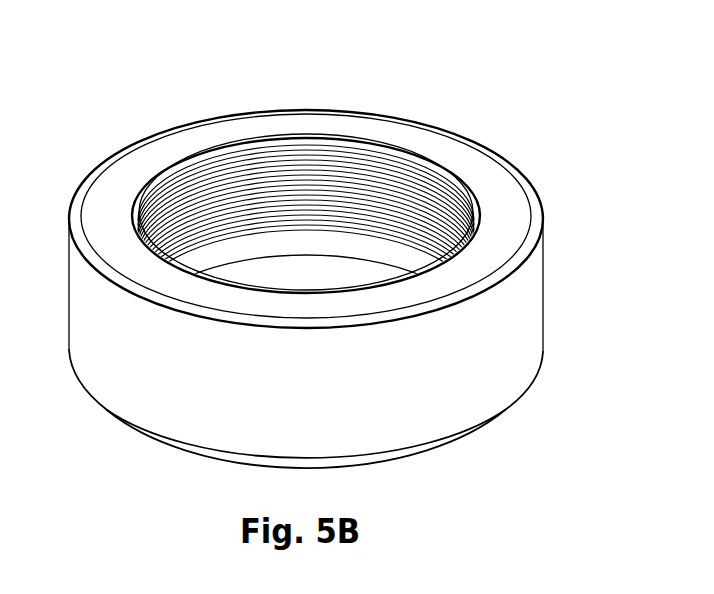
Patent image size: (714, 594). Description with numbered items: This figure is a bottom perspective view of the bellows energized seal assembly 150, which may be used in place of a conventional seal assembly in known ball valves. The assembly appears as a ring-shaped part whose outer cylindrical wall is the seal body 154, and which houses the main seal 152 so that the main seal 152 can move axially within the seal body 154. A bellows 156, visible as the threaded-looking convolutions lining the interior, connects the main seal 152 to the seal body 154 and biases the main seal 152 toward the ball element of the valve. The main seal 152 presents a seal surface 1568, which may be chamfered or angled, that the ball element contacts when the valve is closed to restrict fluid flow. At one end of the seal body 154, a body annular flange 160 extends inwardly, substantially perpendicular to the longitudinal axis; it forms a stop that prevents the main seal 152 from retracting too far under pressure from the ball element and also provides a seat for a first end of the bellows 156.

The bellows energized seal assembly 150 is at (492, 107).
The main seal 152 is at (517, 202).
The seal body 154 is at (530, 300).
The bellows 156 is at (367, 170).
The seal surface 1568 is at (290, 133).
The body annular flange 160 is at (273, 237).